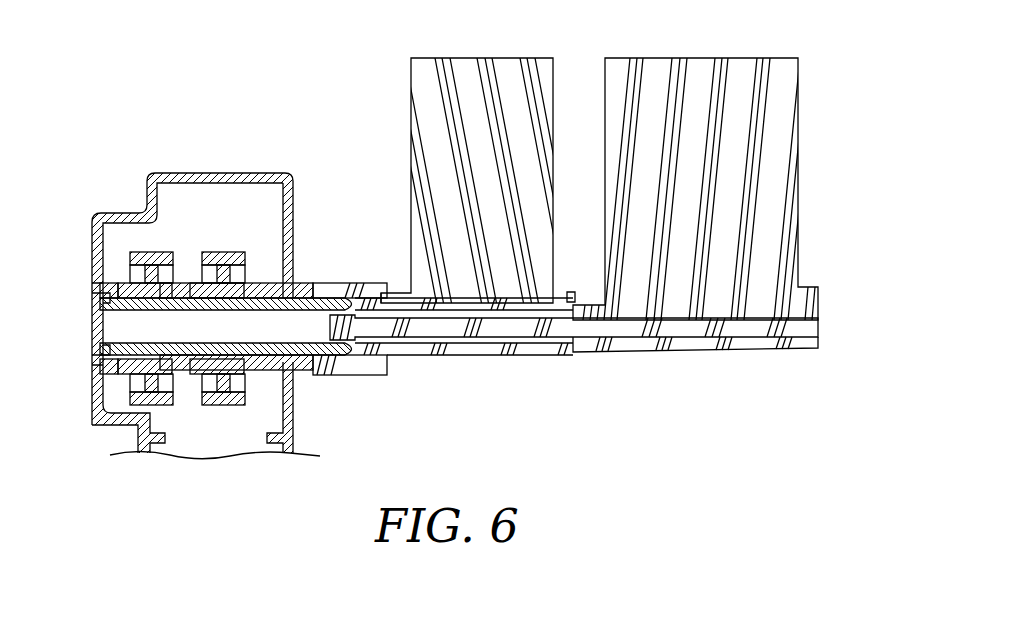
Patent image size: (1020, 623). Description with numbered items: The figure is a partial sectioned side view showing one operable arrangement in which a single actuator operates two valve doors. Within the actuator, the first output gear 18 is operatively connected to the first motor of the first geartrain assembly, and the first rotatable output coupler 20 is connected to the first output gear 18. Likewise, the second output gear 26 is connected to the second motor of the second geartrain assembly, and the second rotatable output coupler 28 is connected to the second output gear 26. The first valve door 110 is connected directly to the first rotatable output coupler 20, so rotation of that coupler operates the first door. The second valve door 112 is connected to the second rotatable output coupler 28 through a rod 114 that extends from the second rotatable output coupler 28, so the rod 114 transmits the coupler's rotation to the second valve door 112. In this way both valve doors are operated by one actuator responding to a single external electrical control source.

The first output gear 18 is at (216, 258).
The first rotatable output coupler 20 is at (300, 288).
The second output gear 26 is at (165, 258).
The second rotatable output coupler 28 is at (97, 352).
The first valve door 110 is at (446, 58).
The second valve door 112 is at (706, 58).
The rod 114 is at (818, 325).